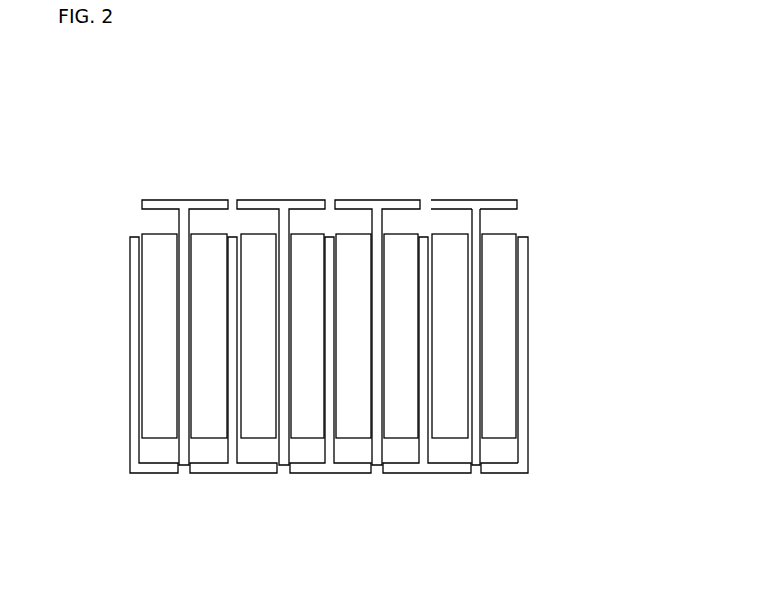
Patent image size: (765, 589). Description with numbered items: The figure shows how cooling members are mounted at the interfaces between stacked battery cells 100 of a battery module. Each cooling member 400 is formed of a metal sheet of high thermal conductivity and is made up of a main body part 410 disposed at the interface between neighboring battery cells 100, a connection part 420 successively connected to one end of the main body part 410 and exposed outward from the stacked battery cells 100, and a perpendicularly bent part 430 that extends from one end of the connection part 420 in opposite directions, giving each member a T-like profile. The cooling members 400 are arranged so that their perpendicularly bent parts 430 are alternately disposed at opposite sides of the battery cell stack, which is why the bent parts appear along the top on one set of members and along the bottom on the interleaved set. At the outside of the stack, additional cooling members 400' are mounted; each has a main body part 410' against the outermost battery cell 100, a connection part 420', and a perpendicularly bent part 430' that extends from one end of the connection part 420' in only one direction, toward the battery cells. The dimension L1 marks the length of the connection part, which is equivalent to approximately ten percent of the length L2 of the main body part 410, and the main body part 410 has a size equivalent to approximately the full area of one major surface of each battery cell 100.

The battery cell 100 is at (154, 239).
The cooling member 400 is at (370, 279).
The main body part 410 is at (534, 353).
The connection part 420 is at (535, 225).
The perpendicularly bent part 430 is at (457, 163).
The cooling member 400' is at (399, 396).
The main body part 410' is at (584, 338).
The connection part 420' is at (585, 454).
The perpendicularly bent part 430' is at (528, 509).
The length of the connection part L1 is at (122, 433).
The length of the main body part L2 is at (122, 240).